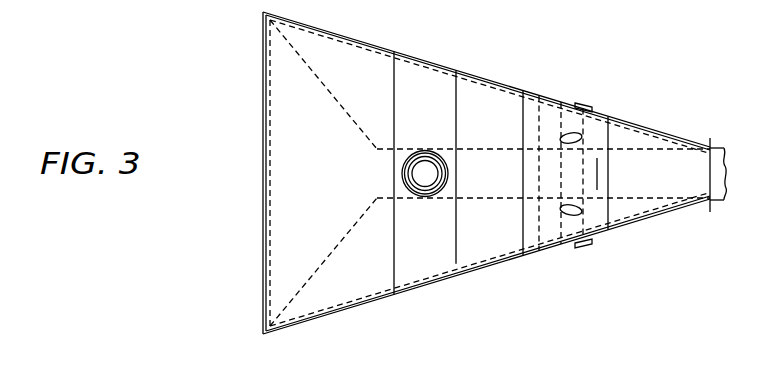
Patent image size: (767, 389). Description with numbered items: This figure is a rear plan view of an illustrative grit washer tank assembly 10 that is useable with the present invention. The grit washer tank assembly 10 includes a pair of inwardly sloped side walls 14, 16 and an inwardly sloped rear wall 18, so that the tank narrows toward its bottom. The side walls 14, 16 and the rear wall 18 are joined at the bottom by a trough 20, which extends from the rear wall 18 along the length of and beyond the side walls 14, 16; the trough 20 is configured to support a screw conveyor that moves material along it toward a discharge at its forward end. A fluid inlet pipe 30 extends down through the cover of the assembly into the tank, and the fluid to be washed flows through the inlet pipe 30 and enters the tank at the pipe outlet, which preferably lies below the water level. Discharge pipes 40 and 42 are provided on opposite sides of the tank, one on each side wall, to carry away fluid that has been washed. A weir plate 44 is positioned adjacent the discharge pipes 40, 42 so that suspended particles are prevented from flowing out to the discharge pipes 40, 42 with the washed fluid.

The grit washer tank assembly 10 is at (660, 84).
The side wall 14 is at (487, 266).
The side wall 16 is at (482, 78).
The rear wall 18 is at (288, 167).
The trough 20 is at (676, 150).
The fluid inlet pipe 30 is at (410, 199).
The discharge pipe 40 is at (588, 103).
The discharge pipe 42 is at (588, 245).
The weir plate 44 is at (560, 226).